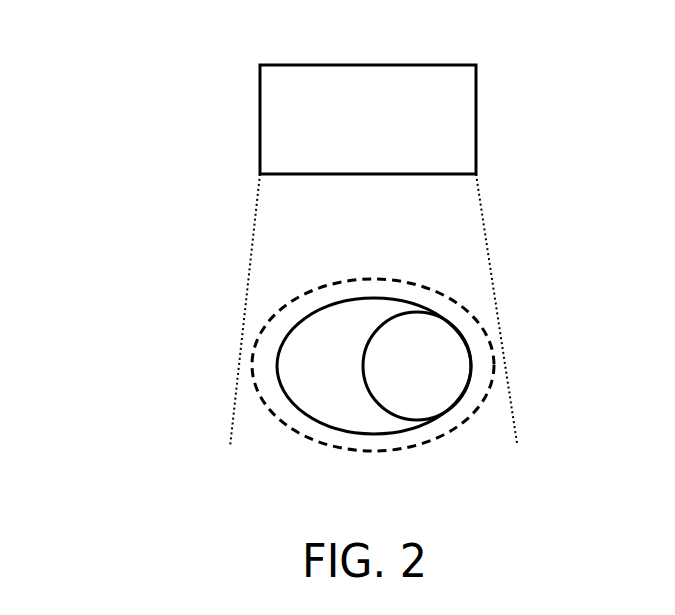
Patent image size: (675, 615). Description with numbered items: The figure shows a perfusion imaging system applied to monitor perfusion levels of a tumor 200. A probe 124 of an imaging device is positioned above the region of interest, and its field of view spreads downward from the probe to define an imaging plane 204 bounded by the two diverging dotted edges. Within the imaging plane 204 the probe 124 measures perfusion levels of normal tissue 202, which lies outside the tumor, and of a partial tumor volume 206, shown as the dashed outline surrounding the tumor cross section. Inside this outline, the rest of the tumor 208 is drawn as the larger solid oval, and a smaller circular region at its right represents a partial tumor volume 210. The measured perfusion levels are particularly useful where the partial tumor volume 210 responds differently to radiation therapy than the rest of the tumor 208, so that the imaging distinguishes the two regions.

The tumor 200 is at (122, 93).
The probe 124 is at (477, 120).
The normal tissue 202 is at (488, 250).
The imaging plane 204 is at (270, 228).
The partial tumor volume 206 is at (455, 310).
The rest of the tumor 208 is at (283, 367).
The partial tumor volume 210 is at (433, 375).